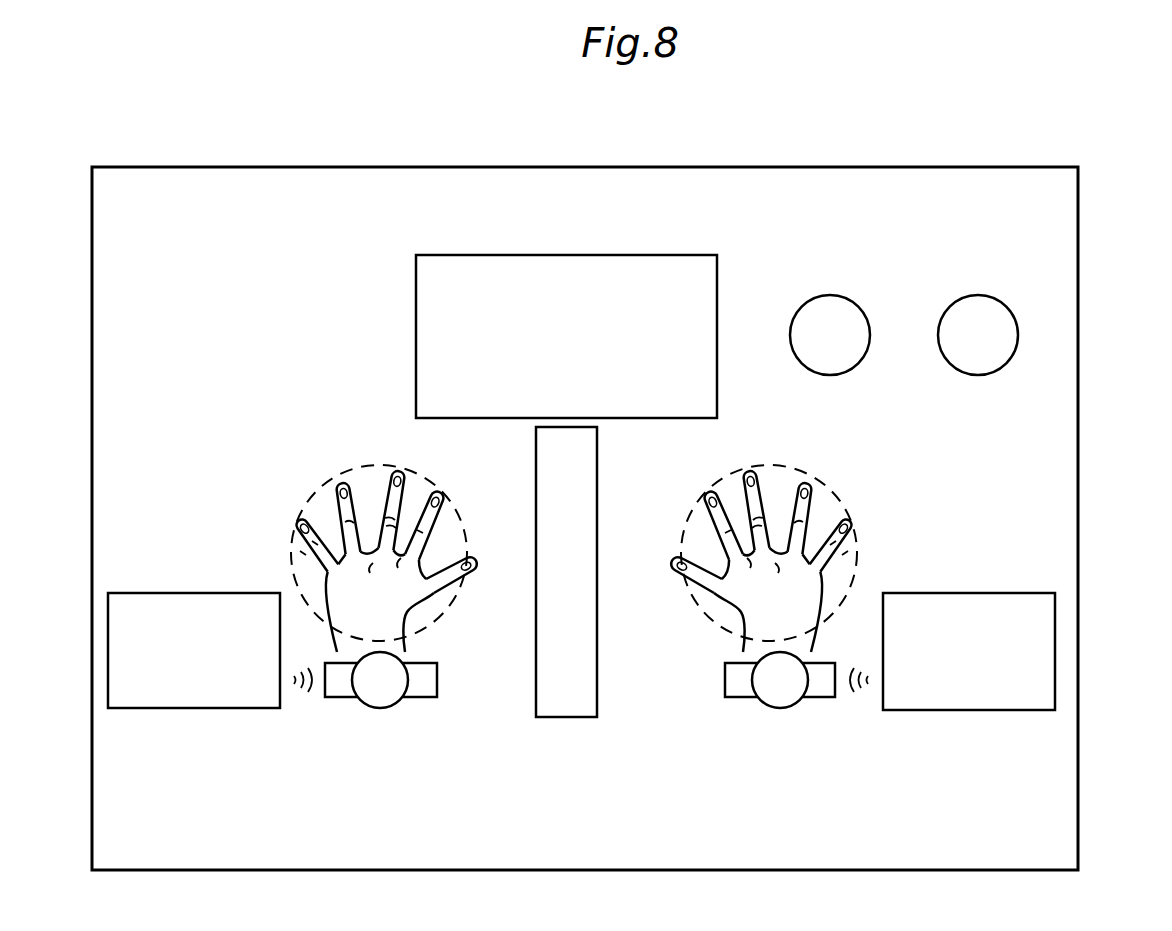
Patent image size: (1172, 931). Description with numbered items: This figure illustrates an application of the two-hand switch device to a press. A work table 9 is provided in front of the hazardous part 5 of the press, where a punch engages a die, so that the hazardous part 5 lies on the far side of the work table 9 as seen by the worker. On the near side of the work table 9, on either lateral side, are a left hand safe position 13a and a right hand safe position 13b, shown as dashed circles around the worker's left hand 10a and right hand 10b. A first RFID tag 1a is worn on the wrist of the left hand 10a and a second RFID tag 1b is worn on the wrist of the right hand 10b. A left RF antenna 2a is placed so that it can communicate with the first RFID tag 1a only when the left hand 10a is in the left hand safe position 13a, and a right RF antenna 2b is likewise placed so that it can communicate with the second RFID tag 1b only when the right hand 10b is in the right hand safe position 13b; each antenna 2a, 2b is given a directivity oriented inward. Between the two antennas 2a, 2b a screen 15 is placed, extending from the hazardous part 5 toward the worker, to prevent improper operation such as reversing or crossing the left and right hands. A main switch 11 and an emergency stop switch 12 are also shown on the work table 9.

The first RFID tag 1a is at (340, 688).
The second RFID tag 1b is at (820, 688).
The left RF antenna 2a is at (148, 593).
The right RF antenna 2b is at (1028, 593).
The hazardous part of the press 5 is at (554, 355).
The work table 9 is at (1020, 440).
The left hand 10a is at (352, 630).
The right hand 10b is at (805, 608).
The main switch 11 is at (832, 312).
The emergency stop switch 12 is at (978, 313).
The left hand safe position 13a is at (360, 478).
The right hand safe position 13b is at (823, 510).
The screen for preventing improper modes of operation 15 is at (585, 468).